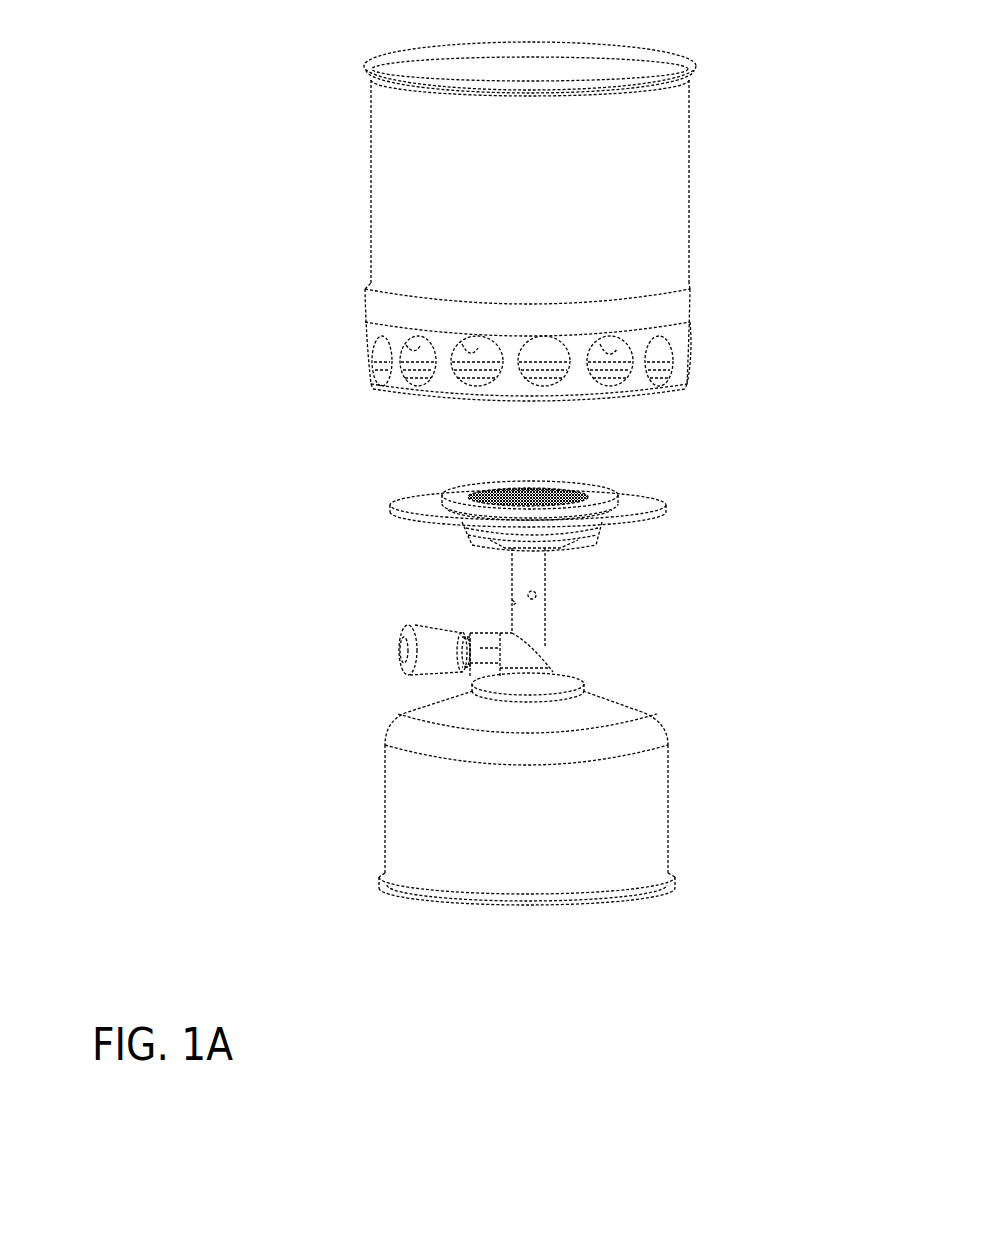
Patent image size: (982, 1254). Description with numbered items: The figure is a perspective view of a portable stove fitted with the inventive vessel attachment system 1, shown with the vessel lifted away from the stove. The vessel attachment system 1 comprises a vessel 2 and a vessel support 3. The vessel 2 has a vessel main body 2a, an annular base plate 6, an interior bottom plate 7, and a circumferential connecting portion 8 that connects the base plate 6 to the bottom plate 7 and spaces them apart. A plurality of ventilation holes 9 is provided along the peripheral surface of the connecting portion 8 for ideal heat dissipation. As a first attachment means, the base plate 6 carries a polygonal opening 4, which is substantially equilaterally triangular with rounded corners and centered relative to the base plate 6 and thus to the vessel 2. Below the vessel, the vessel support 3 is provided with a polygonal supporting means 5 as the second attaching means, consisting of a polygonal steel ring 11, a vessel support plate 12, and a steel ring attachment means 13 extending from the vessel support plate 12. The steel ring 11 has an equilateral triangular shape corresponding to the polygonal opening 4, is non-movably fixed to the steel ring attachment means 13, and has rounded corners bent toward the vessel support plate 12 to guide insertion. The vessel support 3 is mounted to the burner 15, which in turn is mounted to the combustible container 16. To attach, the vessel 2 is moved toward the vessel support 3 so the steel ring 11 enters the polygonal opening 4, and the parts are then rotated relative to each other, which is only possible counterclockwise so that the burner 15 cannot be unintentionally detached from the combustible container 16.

The vessel attachment system 1 is at (264, 135).
The vessel 2 is at (700, 195).
The vessel main body 2a is at (396, 239).
The vessel support 3 is at (390, 493).
The polygonal opening 4 is at (549, 380).
The polygonal supporting means 5 is at (662, 498).
The base plate 6 is at (668, 386).
The bottom plate 7 is at (682, 303).
The connecting portion 8 is at (398, 378).
The ventilation holes 9 is at (683, 351).
The polygonal steel ring 11 is at (620, 512).
The vessel support plate 12 is at (415, 515).
The steel ring attachment means 13 is at (452, 500).
The burner 15 is at (548, 496).
The combustible container 16 is at (595, 708).